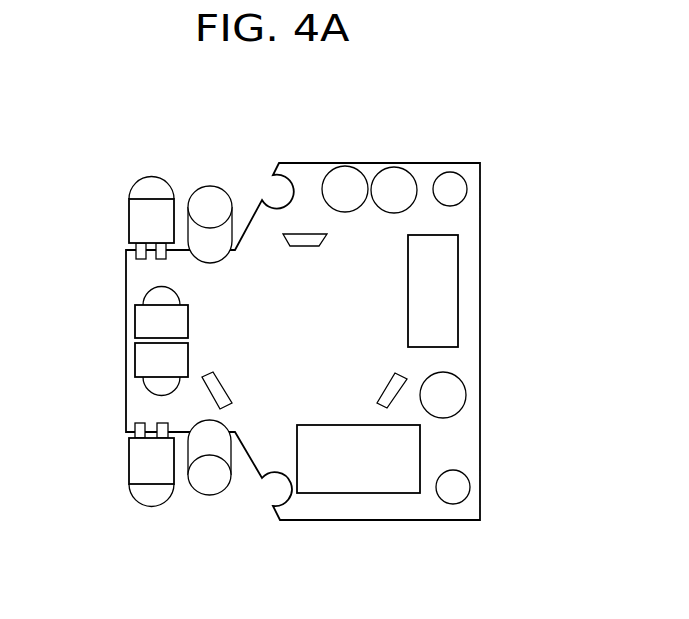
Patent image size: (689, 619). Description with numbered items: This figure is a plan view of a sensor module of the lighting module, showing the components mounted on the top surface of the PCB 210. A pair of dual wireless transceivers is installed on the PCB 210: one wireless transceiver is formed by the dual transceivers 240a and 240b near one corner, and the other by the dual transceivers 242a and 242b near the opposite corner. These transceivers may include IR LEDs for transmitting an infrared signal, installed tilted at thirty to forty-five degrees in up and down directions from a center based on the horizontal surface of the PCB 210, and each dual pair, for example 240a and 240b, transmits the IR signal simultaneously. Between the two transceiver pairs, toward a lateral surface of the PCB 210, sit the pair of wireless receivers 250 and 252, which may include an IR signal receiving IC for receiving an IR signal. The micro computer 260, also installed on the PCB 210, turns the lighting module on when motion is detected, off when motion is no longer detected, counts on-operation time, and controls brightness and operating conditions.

The PCB 210 is at (380, 162).
The dual transceiver 240a is at (153, 188).
The dual transceiver 240b is at (208, 198).
The dual transceiver 242a is at (152, 493).
The dual transceiver 242b is at (208, 482).
The wireless receiver 250 is at (150, 323).
The wireless receiver 252 is at (150, 360).
The micro computer 260 is at (442, 288).